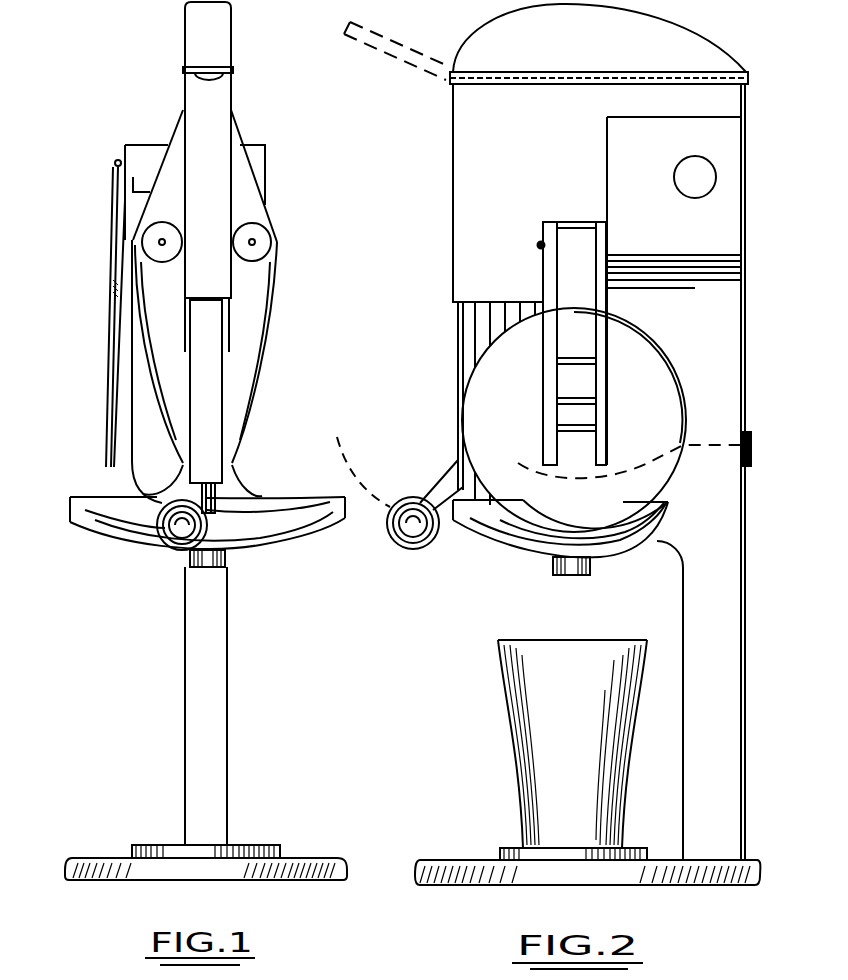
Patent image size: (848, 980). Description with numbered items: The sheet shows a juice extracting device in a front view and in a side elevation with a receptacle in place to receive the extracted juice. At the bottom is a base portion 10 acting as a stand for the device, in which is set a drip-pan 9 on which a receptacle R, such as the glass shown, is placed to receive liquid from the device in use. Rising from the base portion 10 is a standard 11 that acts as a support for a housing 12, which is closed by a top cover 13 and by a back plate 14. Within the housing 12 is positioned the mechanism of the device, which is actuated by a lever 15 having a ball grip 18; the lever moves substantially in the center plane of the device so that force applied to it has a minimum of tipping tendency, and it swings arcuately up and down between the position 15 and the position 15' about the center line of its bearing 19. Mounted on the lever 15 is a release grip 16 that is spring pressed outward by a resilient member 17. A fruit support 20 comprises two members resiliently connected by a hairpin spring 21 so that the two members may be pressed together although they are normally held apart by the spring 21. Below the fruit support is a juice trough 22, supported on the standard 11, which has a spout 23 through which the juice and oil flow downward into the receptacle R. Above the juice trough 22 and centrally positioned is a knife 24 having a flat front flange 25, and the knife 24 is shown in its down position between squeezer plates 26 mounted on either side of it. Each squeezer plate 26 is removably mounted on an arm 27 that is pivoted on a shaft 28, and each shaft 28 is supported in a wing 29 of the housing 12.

In FIG. 1, the drip-pan 9 is at (246, 846).
In FIG. 2, the drip-pan 9 is at (525, 849).
In FIG. 1, the base portion 10 is at (300, 859).
In FIG. 2, the base portion 10 is at (491, 859).
In FIG. 1, the standard 11 is at (210, 661).
In FIG. 2, the standard 11 is at (723, 633).
In FIG. 2, the housing 12 is at (712, 310).
In FIG. 1, the top cover 13 is at (202, 24).
In FIG. 2, the top cover 13 is at (496, 51).
In FIG. 2, the back plate 14 is at (746, 191).
In FIG. 1, the lever 15 is at (112, 371).
In FIG. 2, the lever 15 is at (400, 473).
In FIG. 2, the lever position 15' is at (396, 91).
In FIG. 1, the release grip 16 is at (111, 427).
In FIG. 1, the resilient member 17 is at (117, 372).
In FIG. 1, the ball grip 18 is at (175, 528).
In FIG. 2, the ball grip 18 is at (407, 537).
In FIG. 1, the bearing 19 is at (166, 148).
In FIG. 2, the bearing 19 is at (690, 178).
In FIG. 2, the fruit support 20 is at (648, 466).
In FIG. 2, the hairpin spring 21 is at (753, 456).
In FIG. 1, the juice trough 22 is at (260, 515).
In FIG. 2, the juice trough 22 is at (556, 531).
In FIG. 1, the spout 23 is at (207, 558).
In FIG. 2, the spout 23 is at (579, 571).
In FIG. 1, the knife 24 is at (214, 509).
In FIG. 2, the knife 24 is at (487, 334).
In FIG. 1, the flat front flange 25 is at (214, 410).
In FIG. 2, the flat front flange 25 is at (461, 373).
In FIG. 1, the squeezer plates 26 is at (186, 372).
In FIG. 2, the squeezer plates 26 is at (512, 415).
In FIG. 1, the arm 27 is at (250, 352).
In FIG. 2, the arm 27 is at (580, 328).
In FIG. 1, the shaft 28 is at (152, 243).
In FIG. 2, the shaft 28 is at (538, 246).
In FIG. 1, the wing 29 is at (244, 188).
In FIG. 2, the receptacle R is at (596, 760).